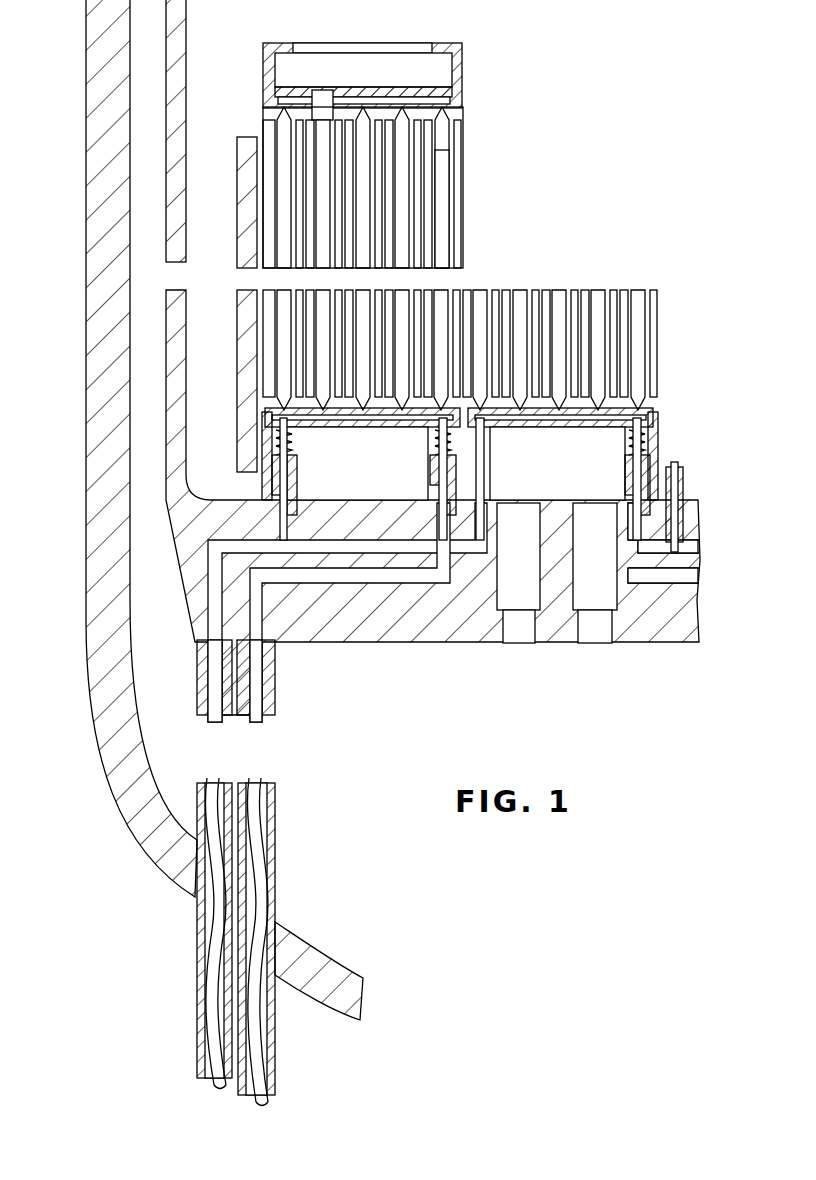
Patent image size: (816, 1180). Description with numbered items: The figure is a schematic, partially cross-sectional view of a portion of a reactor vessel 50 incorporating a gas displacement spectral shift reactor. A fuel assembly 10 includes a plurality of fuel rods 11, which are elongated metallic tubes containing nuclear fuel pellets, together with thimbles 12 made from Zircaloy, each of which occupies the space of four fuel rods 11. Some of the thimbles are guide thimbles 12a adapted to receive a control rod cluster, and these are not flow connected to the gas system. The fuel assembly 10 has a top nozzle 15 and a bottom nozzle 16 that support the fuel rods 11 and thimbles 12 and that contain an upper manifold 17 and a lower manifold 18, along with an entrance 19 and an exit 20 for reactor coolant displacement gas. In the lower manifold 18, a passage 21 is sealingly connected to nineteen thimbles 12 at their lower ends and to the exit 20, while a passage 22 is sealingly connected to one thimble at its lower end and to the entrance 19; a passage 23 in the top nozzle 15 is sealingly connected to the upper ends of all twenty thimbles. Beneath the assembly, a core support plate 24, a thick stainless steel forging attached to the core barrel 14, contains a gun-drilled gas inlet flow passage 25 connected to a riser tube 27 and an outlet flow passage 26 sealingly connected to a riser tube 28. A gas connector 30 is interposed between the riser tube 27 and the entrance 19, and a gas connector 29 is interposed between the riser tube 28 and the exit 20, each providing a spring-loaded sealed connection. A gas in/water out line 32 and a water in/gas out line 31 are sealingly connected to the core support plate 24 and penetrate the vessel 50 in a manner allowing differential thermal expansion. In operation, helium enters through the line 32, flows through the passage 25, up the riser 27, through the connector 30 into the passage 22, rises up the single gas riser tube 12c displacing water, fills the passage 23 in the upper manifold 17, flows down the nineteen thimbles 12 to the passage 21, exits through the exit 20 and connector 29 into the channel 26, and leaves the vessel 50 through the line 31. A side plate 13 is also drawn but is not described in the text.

The fuel assembly 10 is at (522, 172).
The fuel rods 11 is at (452, 150).
The thimbles 12 is at (430, 258).
The guide thimbles 12a is at (322, 105).
The gas riser tube 12c is at (442, 215).
The side plate 13 is at (242, 137).
The core barrel 14 is at (186, 62).
The top nozzle 15 is at (462, 58).
The bottom nozzle 16 is at (262, 440).
The upper manifold 17 is at (452, 100).
The lower manifold 18 is at (355, 430).
The entrance connection 19 is at (435, 445).
The exit connection 20 is at (288, 432).
The passage 21 is at (330, 425).
The passage 22 is at (430, 420).
The passage 23 is at (373, 92).
The core support plate 24 is at (492, 645).
The gas inlet flow passage 25 is at (487, 576).
The outlet flow passage 26 is at (207, 575).
The riser tube 27 is at (437, 500).
The riser tube 28 is at (290, 500).
The gas connector 29 is at (292, 462).
The gas connector 30 is at (430, 470).
The water in/gas out line 31 is at (212, 690).
The gas in/water out line 32 is at (255, 690).
The reactor vessel 50 is at (328, 950).